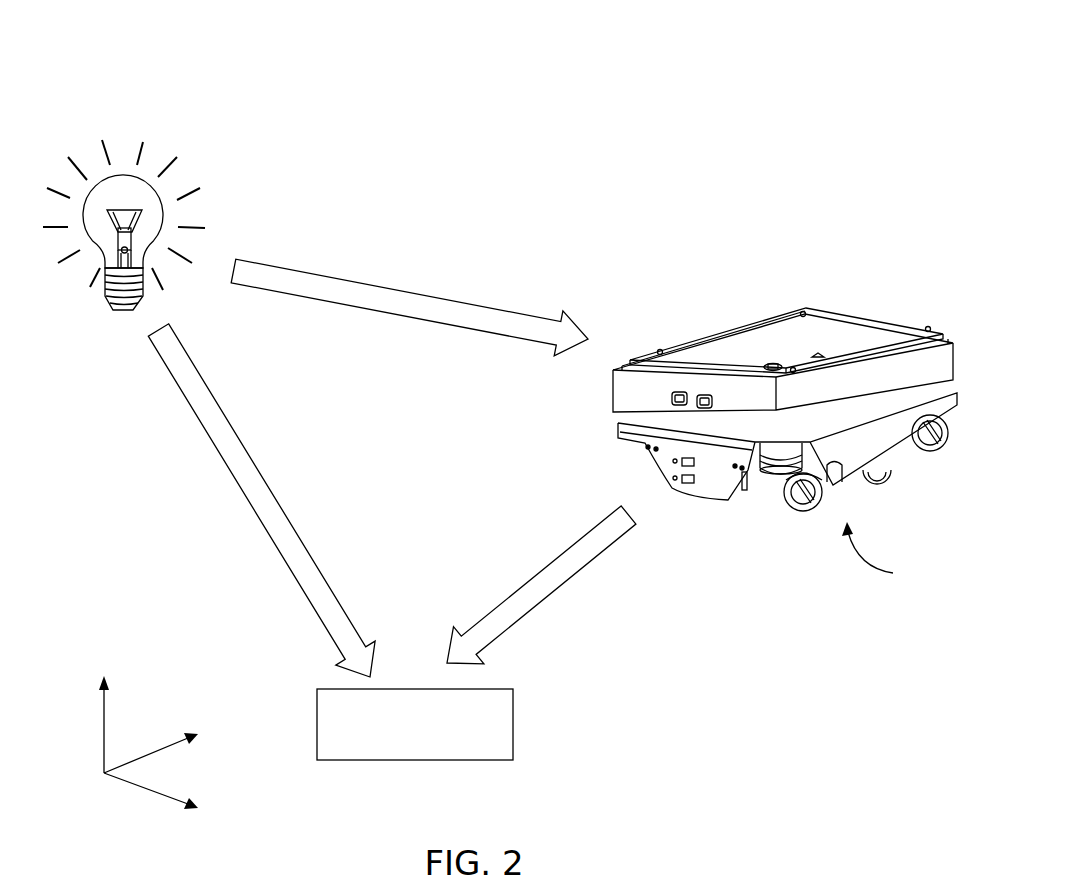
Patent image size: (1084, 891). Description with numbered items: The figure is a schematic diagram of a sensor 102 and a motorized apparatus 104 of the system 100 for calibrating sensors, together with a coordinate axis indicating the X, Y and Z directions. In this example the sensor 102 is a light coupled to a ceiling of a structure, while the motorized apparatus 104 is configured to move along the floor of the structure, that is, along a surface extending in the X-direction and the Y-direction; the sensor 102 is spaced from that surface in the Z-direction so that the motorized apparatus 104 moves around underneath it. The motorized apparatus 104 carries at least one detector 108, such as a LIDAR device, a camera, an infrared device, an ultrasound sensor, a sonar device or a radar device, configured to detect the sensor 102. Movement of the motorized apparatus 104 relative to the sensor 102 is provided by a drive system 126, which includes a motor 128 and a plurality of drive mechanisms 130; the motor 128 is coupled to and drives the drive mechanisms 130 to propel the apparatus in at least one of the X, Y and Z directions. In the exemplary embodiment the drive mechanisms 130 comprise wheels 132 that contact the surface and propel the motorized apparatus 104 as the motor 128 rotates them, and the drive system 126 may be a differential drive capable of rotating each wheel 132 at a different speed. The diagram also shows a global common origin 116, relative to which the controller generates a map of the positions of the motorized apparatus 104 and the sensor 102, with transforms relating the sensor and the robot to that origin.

The system 100 is at (158, 76).
The sensor 102 is at (123, 190).
The motorized apparatus 104 is at (876, 318).
The detector 108 is at (705, 389).
The common origin 116 is at (513, 720).
The drive system 126 is at (889, 555).
The motor 128 is at (760, 484).
The drive mechanism 130 is at (868, 492).
The wheel 132 is at (803, 510).